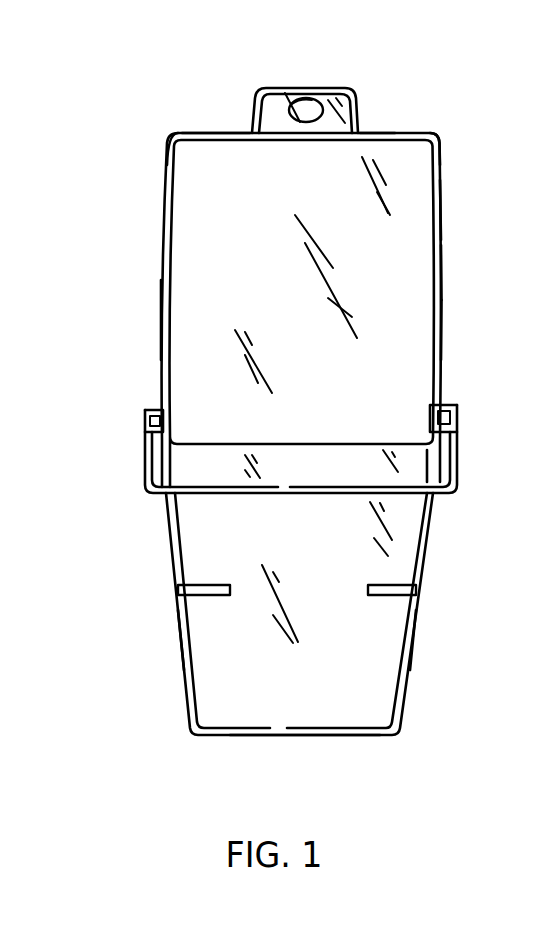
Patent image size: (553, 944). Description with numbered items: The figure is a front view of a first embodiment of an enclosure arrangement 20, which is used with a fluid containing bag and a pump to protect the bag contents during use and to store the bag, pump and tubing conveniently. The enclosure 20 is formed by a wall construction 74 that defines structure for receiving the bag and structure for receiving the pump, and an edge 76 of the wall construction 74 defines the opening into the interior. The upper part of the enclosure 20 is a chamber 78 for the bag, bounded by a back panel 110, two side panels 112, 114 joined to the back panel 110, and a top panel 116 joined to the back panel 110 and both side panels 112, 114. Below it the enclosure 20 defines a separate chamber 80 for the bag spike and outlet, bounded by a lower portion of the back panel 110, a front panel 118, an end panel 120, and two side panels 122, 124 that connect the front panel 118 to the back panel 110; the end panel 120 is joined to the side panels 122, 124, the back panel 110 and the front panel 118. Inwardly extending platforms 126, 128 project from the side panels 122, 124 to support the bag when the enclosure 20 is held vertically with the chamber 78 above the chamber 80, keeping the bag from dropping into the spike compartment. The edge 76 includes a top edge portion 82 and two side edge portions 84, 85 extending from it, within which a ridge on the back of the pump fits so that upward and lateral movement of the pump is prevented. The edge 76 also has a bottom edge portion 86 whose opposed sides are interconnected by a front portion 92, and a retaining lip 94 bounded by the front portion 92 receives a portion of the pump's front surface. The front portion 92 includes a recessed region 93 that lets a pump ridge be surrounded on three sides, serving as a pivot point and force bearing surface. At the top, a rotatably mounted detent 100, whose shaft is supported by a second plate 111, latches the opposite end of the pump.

The enclosure arrangement 20 is at (120, 227).
The wall construction 74 is at (489, 330).
The edge 76 is at (471, 144).
The chamber 78 is at (272, 320).
The chamber 80 is at (378, 686).
The top edge portion 82 is at (216, 98).
The side edge portion 84 is at (172, 165).
The side edge portion 85 is at (477, 210).
The bottom edge portion 86 is at (336, 423).
The front portion 92 is at (433, 397).
The recessed region 93 is at (226, 407).
The retaining lip 94 is at (194, 475).
The detent 100 is at (326, 94).
The back panel 110 is at (242, 196).
The second plate 111 is at (306, 89).
The side panel 112 is at (124, 320).
The side panel 114 is at (486, 272).
The top panel 116 is at (408, 98).
The front panel 118 is at (282, 686).
The end panel 120 is at (328, 737).
The side panel 122 is at (143, 640).
The side panel 124 is at (450, 640).
The platform 126 is at (208, 584).
The platform 128 is at (380, 582).